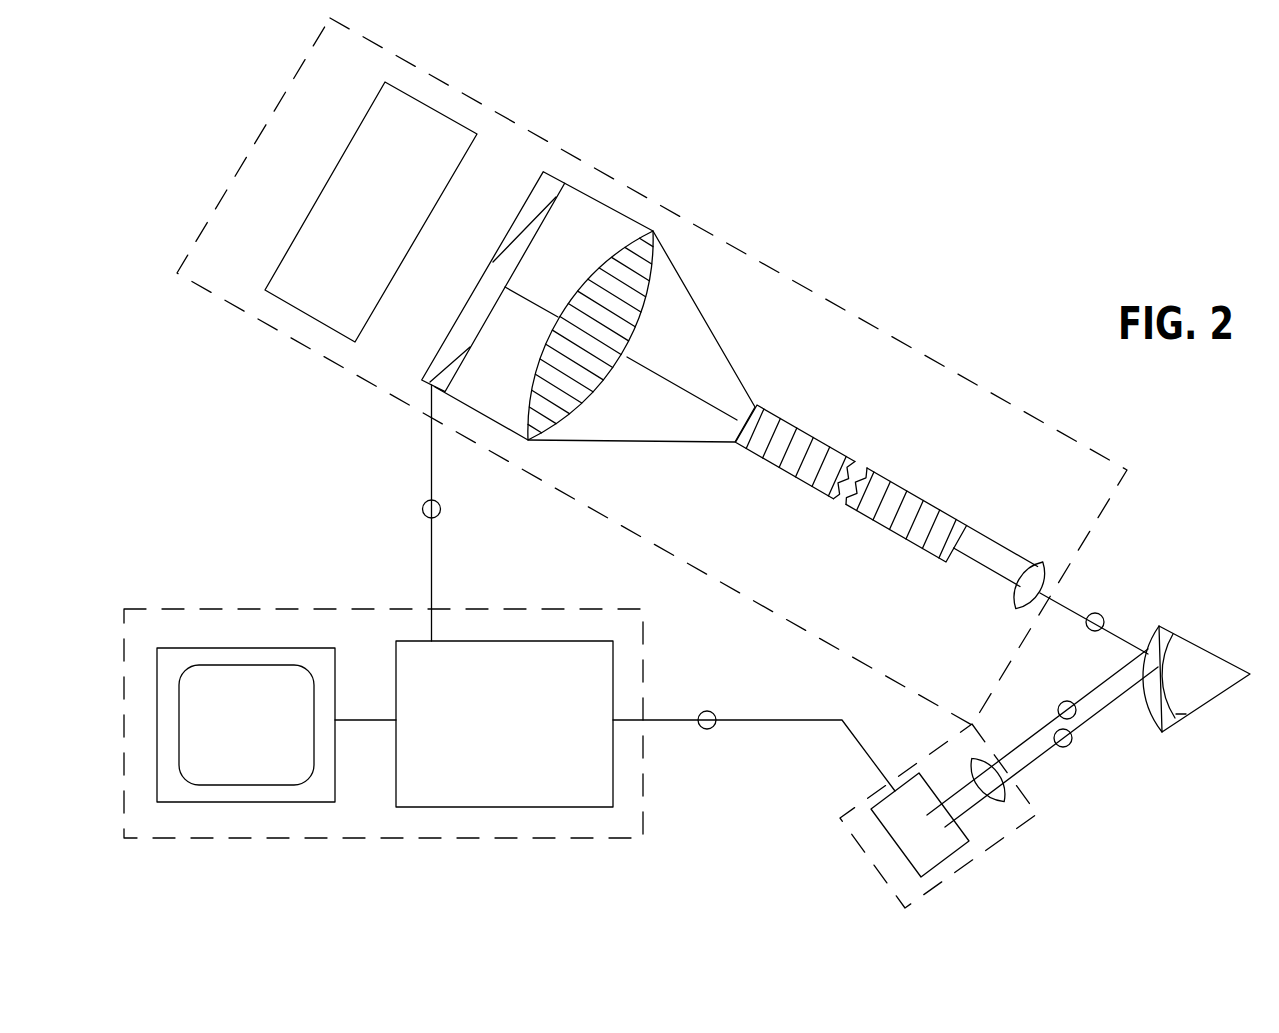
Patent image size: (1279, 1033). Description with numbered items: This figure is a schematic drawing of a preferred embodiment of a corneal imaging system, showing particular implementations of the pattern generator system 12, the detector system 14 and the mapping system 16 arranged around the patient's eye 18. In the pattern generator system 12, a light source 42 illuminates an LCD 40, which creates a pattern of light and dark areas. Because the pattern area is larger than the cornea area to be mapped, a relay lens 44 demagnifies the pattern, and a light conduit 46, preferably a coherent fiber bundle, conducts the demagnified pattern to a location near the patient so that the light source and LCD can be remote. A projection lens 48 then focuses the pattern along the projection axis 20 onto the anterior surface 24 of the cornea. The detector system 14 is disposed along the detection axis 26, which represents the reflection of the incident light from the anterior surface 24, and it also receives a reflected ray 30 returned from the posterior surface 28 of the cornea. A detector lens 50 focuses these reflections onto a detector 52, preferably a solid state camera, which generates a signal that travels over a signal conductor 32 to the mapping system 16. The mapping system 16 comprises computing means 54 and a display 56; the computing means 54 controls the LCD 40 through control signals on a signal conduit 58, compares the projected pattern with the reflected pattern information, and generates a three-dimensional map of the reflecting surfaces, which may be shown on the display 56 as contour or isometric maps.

The pattern generator system 12 is at (787, 265).
The detector system 14 is at (958, 868).
The mapping system 16 is at (138, 609).
The eye 18 is at (1222, 640).
The projection axis 20 is at (1097, 612).
The anterior surface 24 is at (1153, 628).
The detection axis 26 is at (1065, 701).
The posterior surface 28 is at (1180, 714).
The reflected ray 30 is at (1073, 741).
The signal conductor 32 is at (711, 728).
The LCD 40 is at (553, 172).
The light source 42 is at (300, 295).
The relay lens 44 is at (655, 229).
The light conduit 46 is at (907, 498).
The projection lens 48 is at (1037, 562).
The detector lens 50 is at (1003, 795).
The detector 52 is at (902, 845).
The computing means 54 is at (518, 732).
The display 56 is at (260, 732).
The signal conduit 58 is at (422, 507).